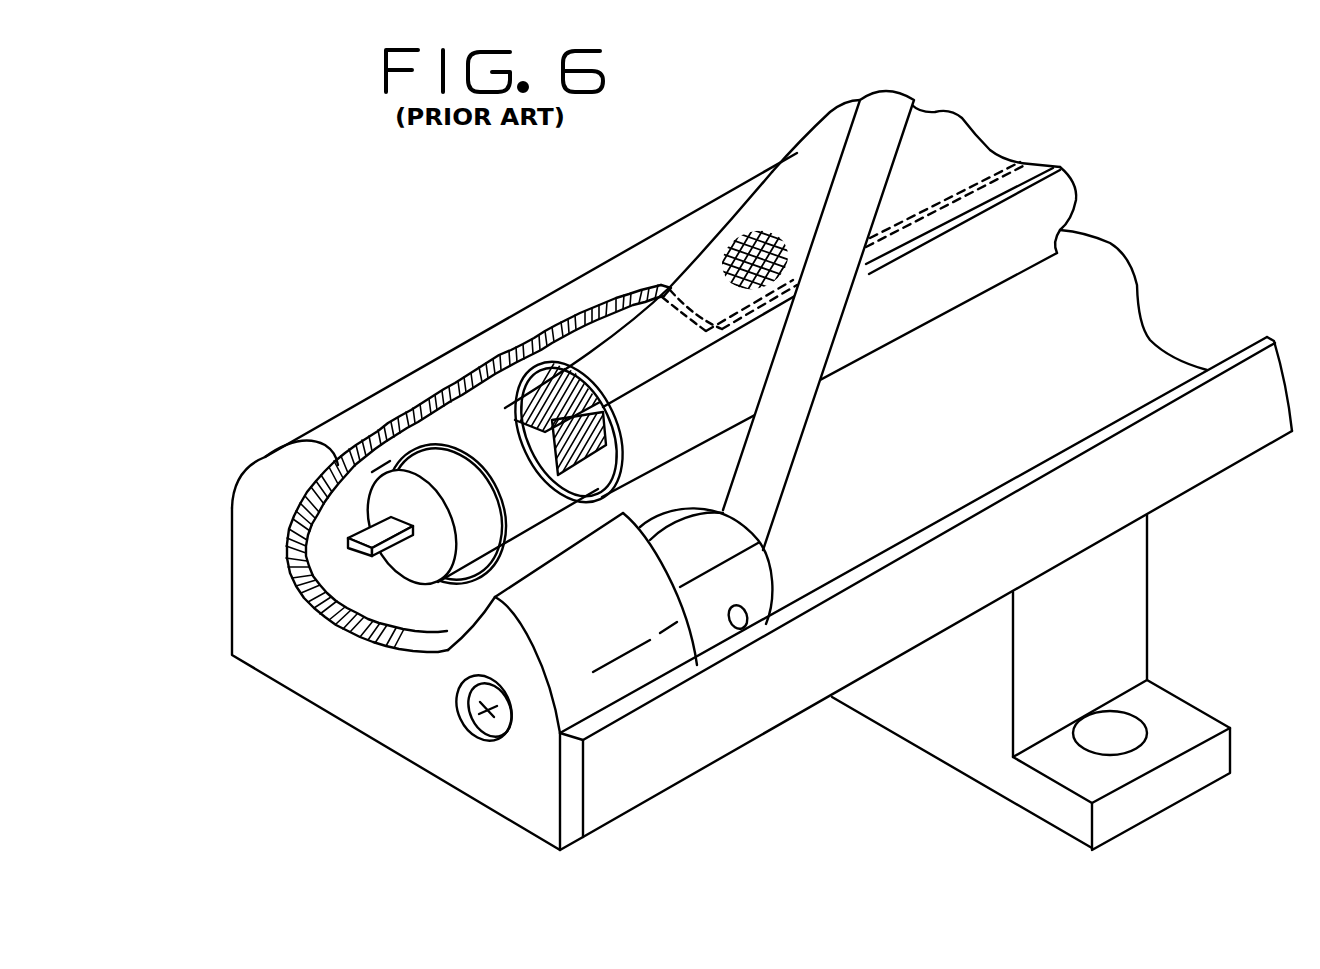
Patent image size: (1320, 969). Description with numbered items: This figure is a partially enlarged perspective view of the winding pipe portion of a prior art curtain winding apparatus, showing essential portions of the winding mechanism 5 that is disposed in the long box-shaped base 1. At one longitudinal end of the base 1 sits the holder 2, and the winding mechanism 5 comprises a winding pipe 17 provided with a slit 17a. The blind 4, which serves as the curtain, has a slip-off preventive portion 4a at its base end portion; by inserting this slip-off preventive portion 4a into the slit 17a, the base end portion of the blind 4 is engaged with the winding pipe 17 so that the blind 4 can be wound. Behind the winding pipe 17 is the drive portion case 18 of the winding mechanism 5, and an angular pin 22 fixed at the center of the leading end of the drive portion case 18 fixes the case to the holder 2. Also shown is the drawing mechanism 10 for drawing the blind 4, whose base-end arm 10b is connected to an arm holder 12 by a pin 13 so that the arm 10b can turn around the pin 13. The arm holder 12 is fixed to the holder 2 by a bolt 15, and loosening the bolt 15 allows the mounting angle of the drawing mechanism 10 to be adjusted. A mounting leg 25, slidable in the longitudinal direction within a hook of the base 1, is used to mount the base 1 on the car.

The base 1 is at (613, 807).
The holder 2 is at (377, 733).
The blind 4 is at (793, 152).
The slip-off preventive portion 4a is at (520, 427).
The winding mechanism 5 is at (459, 583).
The drawing mechanism 10 is at (797, 467).
The arm 10b is at (900, 143).
The arm holder 12 is at (712, 622).
The pin 13 is at (745, 628).
The bolt 15 is at (495, 735).
The winding pipe 17 is at (585, 352).
The slit 17a is at (643, 393).
The drive portion case 18 is at (387, 440).
The angular pin 22 is at (372, 556).
The mounting leg 25 is at (1213, 713).